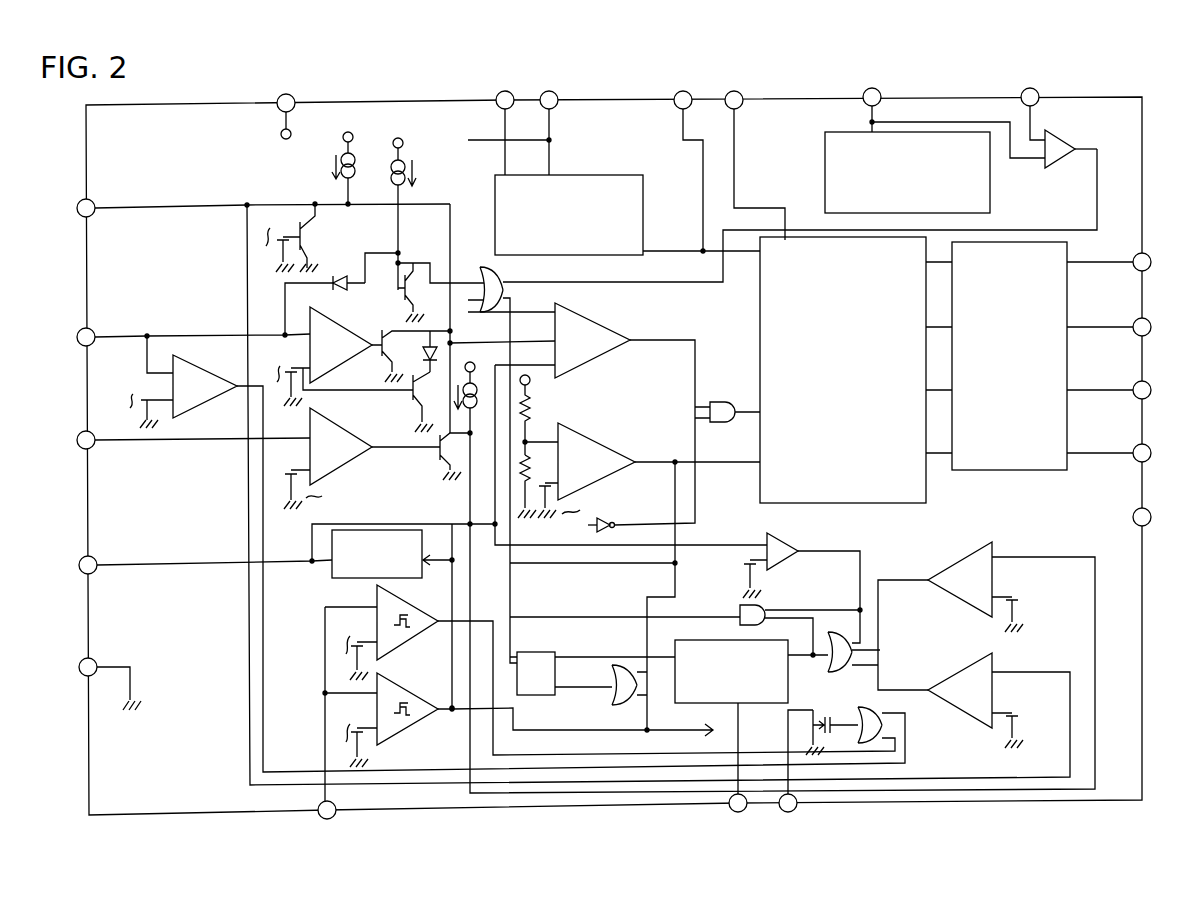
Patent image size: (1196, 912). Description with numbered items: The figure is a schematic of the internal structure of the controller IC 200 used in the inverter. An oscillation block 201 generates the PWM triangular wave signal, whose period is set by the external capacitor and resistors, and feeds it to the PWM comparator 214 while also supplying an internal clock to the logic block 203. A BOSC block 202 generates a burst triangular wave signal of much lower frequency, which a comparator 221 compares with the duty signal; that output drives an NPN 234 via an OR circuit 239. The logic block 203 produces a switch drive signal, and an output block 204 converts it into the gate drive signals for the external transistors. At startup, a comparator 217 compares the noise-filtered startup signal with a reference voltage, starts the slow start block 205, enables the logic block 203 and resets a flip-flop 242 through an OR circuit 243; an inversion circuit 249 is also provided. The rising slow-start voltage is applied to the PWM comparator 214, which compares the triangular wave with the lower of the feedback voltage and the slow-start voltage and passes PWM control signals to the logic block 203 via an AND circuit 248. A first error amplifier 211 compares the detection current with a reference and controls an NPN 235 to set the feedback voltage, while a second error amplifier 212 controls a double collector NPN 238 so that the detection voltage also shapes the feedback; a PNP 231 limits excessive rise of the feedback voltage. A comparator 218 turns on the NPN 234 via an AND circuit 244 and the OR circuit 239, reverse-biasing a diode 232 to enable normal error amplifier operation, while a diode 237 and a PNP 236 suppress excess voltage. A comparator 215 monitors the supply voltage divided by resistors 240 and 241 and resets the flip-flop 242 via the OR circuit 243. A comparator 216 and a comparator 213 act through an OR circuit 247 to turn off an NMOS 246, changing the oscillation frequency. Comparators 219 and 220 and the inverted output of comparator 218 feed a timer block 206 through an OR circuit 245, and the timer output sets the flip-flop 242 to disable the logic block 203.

The controller IC 200 is at (160, 105).
The oscillation (OSC) block 201 is at (590, 173).
The BOSC block 202 is at (992, 192).
The logic block 203 is at (878, 505).
The output block 204 is at (1013, 472).
The slow start block 205 is at (332, 578).
The timer block 206 is at (710, 706).
The first error amplifier 211 is at (320, 312).
The second error amplifier 212 is at (320, 416).
The comparator 213 is at (222, 374).
The PWM comparator 214 is at (586, 310).
The comparator 215 is at (588, 440).
The comparator 216 is at (420, 640).
The comparator 217 is at (424, 719).
The comparator 218 is at (787, 537).
The comparator 219 is at (962, 550).
The comparator 220 is at (954, 660).
The comparator 221 is at (1062, 160).
The PNP transistor 231 is at (296, 232).
The diode 232 is at (345, 280).
The NPN transistor 234 is at (402, 294).
The NPN transistor 235 is at (386, 364).
The PNP transistor 236 is at (418, 406).
The diode 237 is at (452, 344).
The double collector type NPN transistor 238 is at (446, 460).
The OR circuit 239 is at (508, 296).
The resistor 240 is at (539, 415).
The resistor 241 is at (536, 486).
The flip-flop (FF) circuit 242 is at (542, 650).
The OR circuit 243 is at (612, 702).
The AND circuit 244 is at (740, 606).
The OR circuit 245 is at (842, 644).
The NMOS transistor 246 is at (806, 708).
The OR circuit 247 is at (862, 708).
The AND circuit 248 is at (718, 400).
The inversion circuit 249 is at (612, 532).